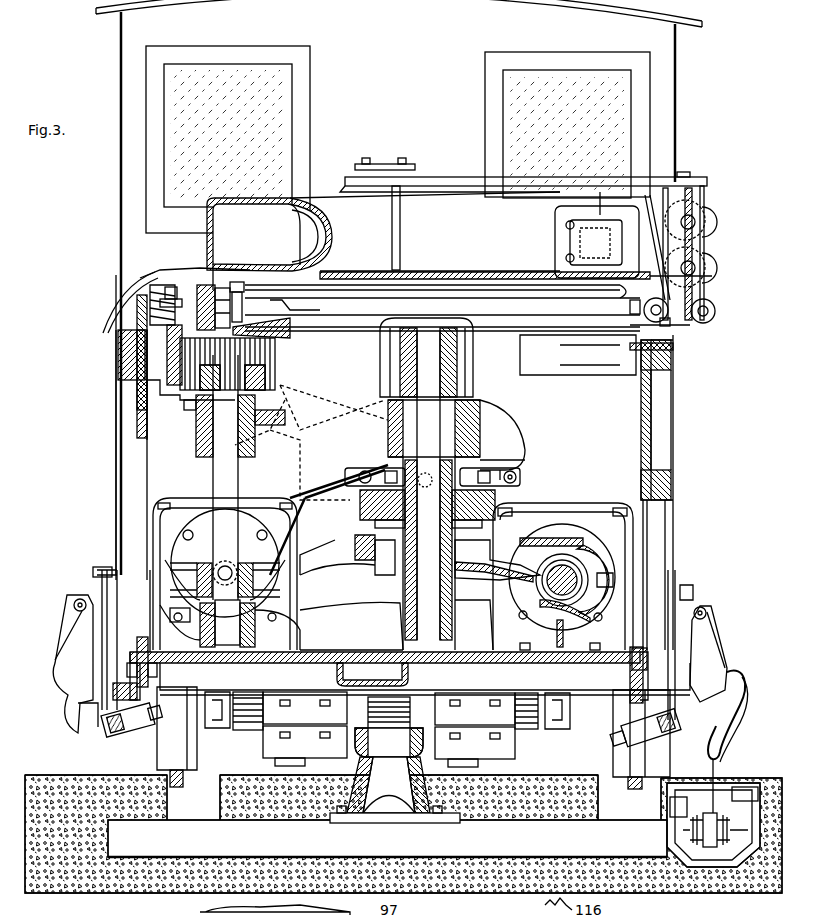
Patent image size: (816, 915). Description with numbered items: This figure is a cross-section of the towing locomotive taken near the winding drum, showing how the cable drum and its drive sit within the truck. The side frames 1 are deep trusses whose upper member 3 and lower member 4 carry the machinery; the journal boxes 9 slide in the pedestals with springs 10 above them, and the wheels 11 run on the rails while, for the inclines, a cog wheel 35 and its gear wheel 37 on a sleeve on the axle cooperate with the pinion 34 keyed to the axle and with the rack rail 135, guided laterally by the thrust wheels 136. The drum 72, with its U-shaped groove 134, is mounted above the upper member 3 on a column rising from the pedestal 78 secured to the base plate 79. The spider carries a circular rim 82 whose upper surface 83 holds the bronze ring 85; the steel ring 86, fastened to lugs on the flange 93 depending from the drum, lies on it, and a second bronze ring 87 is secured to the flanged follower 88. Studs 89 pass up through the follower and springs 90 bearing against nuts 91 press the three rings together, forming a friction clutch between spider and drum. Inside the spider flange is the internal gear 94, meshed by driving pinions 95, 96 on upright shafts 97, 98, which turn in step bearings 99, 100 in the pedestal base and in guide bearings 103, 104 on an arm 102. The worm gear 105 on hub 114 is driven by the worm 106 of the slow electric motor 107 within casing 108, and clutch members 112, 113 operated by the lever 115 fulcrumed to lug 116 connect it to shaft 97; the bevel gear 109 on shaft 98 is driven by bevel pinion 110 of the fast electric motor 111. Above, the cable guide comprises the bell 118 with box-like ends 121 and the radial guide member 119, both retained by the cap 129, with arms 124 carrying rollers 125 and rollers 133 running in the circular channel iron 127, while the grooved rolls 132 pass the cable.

The side frame 1 is at (137, 408).
The upper member 3 is at (118, 357).
The lower member 4 is at (142, 712).
The journal box 9 is at (68, 632).
The spring 10 is at (93, 580).
The wheel 11 is at (157, 752).
The pinion 34 is at (245, 728).
The cog wheel 35 is at (388, 697).
The gear wheel 37 is at (532, 729).
The drum 72 is at (334, 229).
The pedestal 78 is at (324, 492).
The base plate 79 is at (515, 665).
The circular rim 82 is at (150, 380).
The horizontal upper surface 83 is at (261, 328).
The bronze ring 85 is at (206, 285).
The steel ring 86 is at (244, 290).
The second bronze ring 87 is at (224, 288).
The flanged follower 88 is at (180, 285).
The stud 89 is at (118, 343).
The spring 90 is at (140, 316).
The nut 91 is at (152, 270).
The flange 93 is at (276, 303).
The internal gear 94 is at (167, 350).
The driving pinion 95 is at (462, 367).
The driving pinion 96 is at (264, 370).
The upright shaft 97 is at (429, 490).
The upright shaft 98 is at (238, 482).
The step bearing 99 is at (402, 623).
The step bearing 100 is at (255, 628).
The arm 102 is at (285, 440).
The guide bearing 103 is at (388, 432).
The guide bearing 104 is at (196, 418).
The worm gear 105 is at (506, 572).
The worm 106 is at (562, 562).
The electric motor 107 is at (556, 520).
The casing 108 is at (340, 553).
The bevel gear 109 is at (143, 637).
The bevel pinion 110 is at (208, 560).
The electric motor 111 is at (193, 512).
The clutch member 112 is at (368, 492).
The clutch member 113 is at (375, 522).
The hub 114 is at (378, 548).
The lever 115 is at (356, 468).
The lug 116 is at (522, 447).
The guide member 118 is at (207, 218).
The guide member 119 is at (468, 176).
The box-like end 121 is at (582, 208).
The arm 124 is at (712, 276).
The roller 125 is at (608, 306).
The channel iron 127 is at (546, 330).
The cap 129 is at (398, 158).
The grooved roll 132 is at (712, 230).
The roller 133 is at (668, 326).
The groove 134 is at (312, 249).
The rack rail 135 is at (395, 790).
The thrust wheel 136 is at (410, 745).